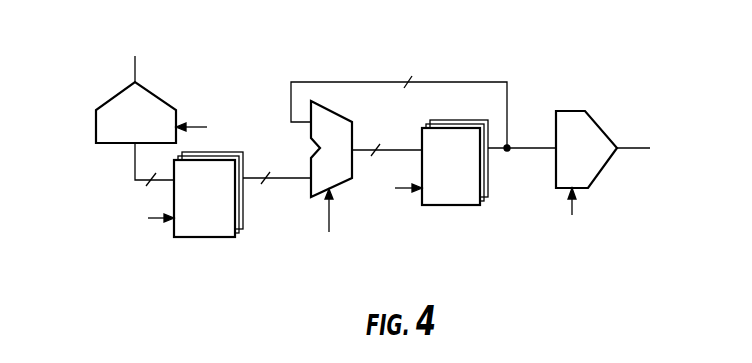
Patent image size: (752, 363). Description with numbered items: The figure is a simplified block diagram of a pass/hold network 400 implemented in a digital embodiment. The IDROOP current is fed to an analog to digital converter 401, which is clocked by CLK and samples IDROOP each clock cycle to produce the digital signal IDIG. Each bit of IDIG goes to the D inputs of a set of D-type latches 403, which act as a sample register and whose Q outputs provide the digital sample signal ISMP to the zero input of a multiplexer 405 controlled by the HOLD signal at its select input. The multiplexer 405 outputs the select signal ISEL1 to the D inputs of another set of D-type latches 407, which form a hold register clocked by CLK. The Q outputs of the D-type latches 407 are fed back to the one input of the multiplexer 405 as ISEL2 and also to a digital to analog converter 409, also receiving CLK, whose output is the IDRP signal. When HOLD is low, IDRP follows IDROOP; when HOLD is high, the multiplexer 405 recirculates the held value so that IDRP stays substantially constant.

The pass/hold network 400 is at (375, 180).
The analog to digital converter (ADC) 401 is at (113, 98).
The D-type latches 403 is at (210, 238).
The multiplexer (MUX) 405 is at (330, 110).
The D-type latches 407 is at (448, 206).
The digital to analog converter (DAC) 409 is at (570, 111).